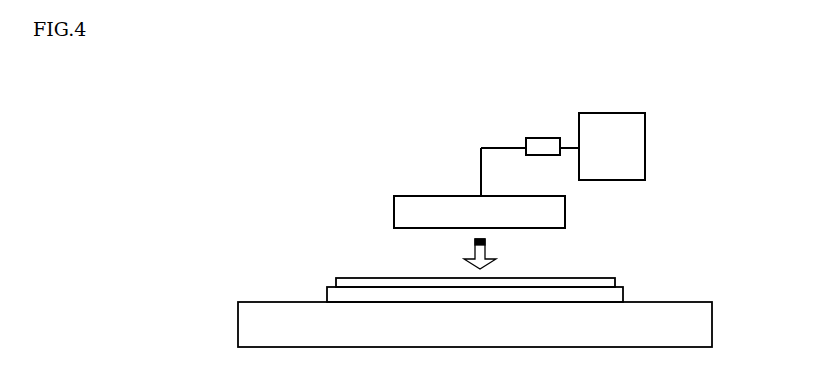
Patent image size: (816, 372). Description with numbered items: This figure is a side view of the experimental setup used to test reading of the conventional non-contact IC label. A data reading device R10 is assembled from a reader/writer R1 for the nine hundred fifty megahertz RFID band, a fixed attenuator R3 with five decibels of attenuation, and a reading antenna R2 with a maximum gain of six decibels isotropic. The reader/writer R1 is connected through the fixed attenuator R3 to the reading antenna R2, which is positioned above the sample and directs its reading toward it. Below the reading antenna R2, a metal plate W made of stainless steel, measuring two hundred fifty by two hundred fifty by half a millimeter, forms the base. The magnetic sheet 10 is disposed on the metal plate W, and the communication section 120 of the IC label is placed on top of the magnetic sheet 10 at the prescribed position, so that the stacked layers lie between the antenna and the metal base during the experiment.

The data reading device R10 is at (561, 117).
The reader/writer R1 is at (640, 145).
The fixed attenuator R3 is at (540, 142).
The reading antenna R2 is at (558, 212).
The communication section 120 is at (336, 283).
The magnetic sheet 10 is at (327, 298).
The metal plate W is at (703, 327).